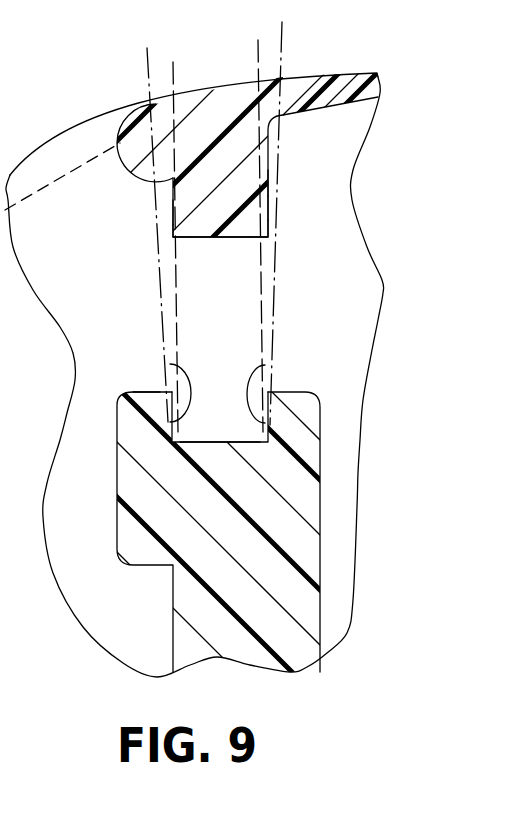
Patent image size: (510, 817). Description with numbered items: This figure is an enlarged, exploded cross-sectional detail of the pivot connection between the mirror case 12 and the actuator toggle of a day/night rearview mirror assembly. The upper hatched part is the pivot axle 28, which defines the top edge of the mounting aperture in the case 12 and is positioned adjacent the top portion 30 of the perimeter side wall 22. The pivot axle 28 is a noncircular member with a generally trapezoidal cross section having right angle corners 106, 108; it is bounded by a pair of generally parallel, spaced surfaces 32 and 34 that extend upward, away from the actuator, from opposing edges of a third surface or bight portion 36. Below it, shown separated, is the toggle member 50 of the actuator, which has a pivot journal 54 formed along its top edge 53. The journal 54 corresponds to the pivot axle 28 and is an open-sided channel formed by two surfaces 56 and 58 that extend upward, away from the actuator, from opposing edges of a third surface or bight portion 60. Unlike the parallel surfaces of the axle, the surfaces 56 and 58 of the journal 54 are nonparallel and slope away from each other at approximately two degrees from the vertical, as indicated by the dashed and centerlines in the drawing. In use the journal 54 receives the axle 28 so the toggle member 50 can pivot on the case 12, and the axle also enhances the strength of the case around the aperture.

The case 12 is at (393, 297).
The perimeter side wall 22 is at (330, 83).
The pivot axle 28 is at (277, 178).
The top portion of side wall 30 is at (232, 85).
The surface 32 is at (172, 212).
The surface 34 is at (270, 203).
The bight portion 36 is at (202, 237).
The toggle member 50 is at (218, 629).
The top edge 53 is at (147, 392).
The pivot journal 54 is at (211, 360).
The surface 56 is at (172, 363).
The surface 58 is at (273, 364).
The bight portion 60 is at (250, 442).
The right angle corner 106 is at (173, 237).
The right angle corner 108 is at (270, 237).